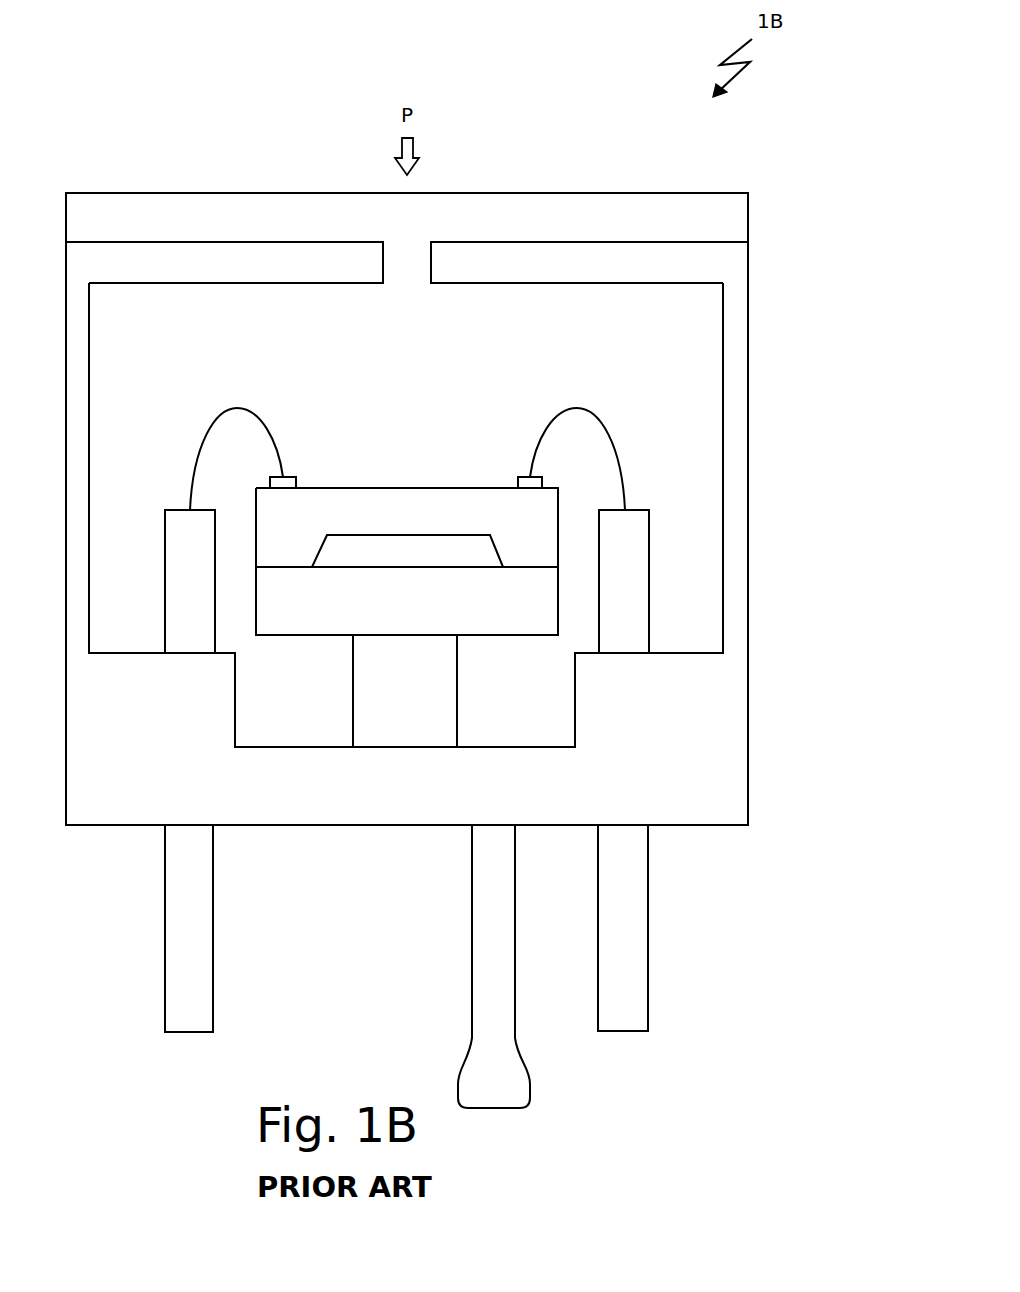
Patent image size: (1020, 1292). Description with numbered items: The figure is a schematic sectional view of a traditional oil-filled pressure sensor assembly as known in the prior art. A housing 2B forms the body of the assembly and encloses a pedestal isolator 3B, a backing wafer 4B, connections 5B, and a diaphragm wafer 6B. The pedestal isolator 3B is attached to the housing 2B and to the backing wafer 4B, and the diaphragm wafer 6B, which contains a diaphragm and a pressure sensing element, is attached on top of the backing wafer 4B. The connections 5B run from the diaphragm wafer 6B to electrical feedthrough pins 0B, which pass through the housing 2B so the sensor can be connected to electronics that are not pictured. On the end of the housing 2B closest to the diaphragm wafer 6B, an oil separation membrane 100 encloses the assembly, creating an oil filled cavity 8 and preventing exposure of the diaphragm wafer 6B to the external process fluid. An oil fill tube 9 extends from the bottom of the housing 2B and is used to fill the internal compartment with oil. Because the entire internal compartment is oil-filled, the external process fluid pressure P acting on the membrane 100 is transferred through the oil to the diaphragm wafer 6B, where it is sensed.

The oil separation membrane 100 is at (213, 193).
The oil filled cavity 8 is at (563, 220).
The housing 2B is at (712, 766).
The electrical feedthrough pins 0B is at (183, 970).
The oil fill tube 9 is at (506, 1085).
The pedestal isolator 3B is at (436, 711).
The backing wafer 4B is at (407, 585).
The diaphragm wafer 6B is at (407, 522).
The connections 5B is at (222, 412).